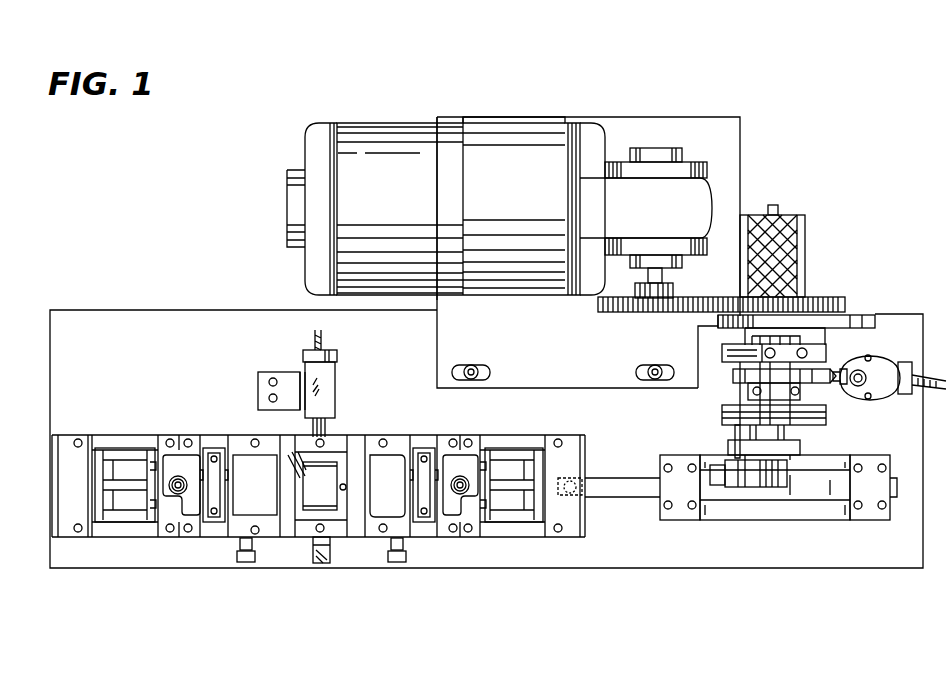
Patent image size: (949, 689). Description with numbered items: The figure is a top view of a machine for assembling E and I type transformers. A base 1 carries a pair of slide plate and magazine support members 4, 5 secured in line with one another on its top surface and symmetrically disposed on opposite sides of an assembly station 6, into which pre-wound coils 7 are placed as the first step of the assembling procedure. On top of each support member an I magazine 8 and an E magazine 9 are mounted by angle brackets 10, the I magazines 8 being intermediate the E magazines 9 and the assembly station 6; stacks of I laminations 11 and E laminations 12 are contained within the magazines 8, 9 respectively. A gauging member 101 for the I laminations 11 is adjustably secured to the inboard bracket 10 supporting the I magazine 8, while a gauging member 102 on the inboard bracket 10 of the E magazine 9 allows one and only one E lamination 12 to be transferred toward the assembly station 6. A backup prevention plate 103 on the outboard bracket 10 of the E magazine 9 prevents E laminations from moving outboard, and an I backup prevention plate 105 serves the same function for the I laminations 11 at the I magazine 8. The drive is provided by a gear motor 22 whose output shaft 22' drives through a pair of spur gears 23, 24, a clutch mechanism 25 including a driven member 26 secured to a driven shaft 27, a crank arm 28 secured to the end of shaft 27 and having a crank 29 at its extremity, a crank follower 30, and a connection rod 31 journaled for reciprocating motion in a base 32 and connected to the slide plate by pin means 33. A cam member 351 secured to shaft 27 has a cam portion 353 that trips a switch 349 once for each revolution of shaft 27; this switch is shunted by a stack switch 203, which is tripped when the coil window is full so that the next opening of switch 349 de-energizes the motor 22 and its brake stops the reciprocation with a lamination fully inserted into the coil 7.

The base 1 is at (172, 331).
The slide plate and magazine support member 4 is at (125, 427).
The slide plate and magazine support member 5 is at (424, 426).
The assembly station 6 is at (340, 430).
The pre-wound coil 7 is at (324, 496).
The I magazine 8 is at (214, 447).
The E magazine 9 is at (143, 446).
The angle bracket 10 is at (66, 438).
The I lamination 11 is at (218, 522).
The E lamination 12 is at (128, 522).
The motor 22 is at (446, 208).
The output shaft 22' is at (646, 223).
The spur gear 23 is at (606, 312).
The spur gear 24 is at (836, 297).
The clutch mechanism 25 is at (826, 278).
The driven member 26 is at (722, 330).
The driven shaft 27 is at (803, 432).
The crank arm 28 is at (735, 447).
The crank 29 is at (722, 466).
The crank follower 30 is at (778, 471).
The connection rod 31 is at (614, 492).
The base 32 is at (678, 520).
The pin means 33 is at (567, 480).
The gauging member 101 is at (226, 489).
The gauging member 102 is at (147, 489).
The backup prevention plate 103 is at (90, 490).
The I backup prevention plate 105 is at (195, 490).
The stack switch 203 is at (326, 384).
The switch 349 is at (890, 362).
The cam member 351 is at (738, 376).
The cam portion 353 is at (808, 366).